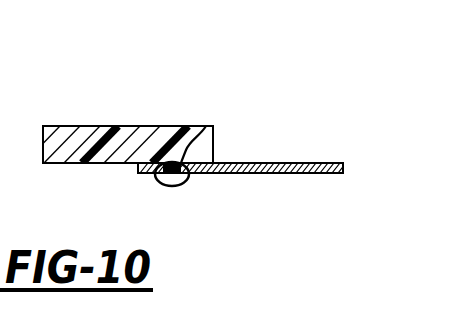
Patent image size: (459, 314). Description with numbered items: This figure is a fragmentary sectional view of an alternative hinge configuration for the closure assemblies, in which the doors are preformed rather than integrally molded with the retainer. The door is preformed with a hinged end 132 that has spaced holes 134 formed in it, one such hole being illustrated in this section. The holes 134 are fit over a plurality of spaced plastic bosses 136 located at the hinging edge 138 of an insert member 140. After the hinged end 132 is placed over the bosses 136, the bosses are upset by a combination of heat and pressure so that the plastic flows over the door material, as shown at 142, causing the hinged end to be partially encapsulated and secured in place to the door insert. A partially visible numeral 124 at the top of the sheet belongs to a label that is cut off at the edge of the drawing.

The partial numeral (cut off at sheet top) 124 is at (161, 6).
The insert member 140 is at (129, 122).
The plastic boss 136 is at (210, 125).
The hinging edge 138 is at (213, 156).
The hinged end 132 is at (310, 174).
The hole 134 is at (180, 187).
The upset boss portion 142 is at (157, 184).